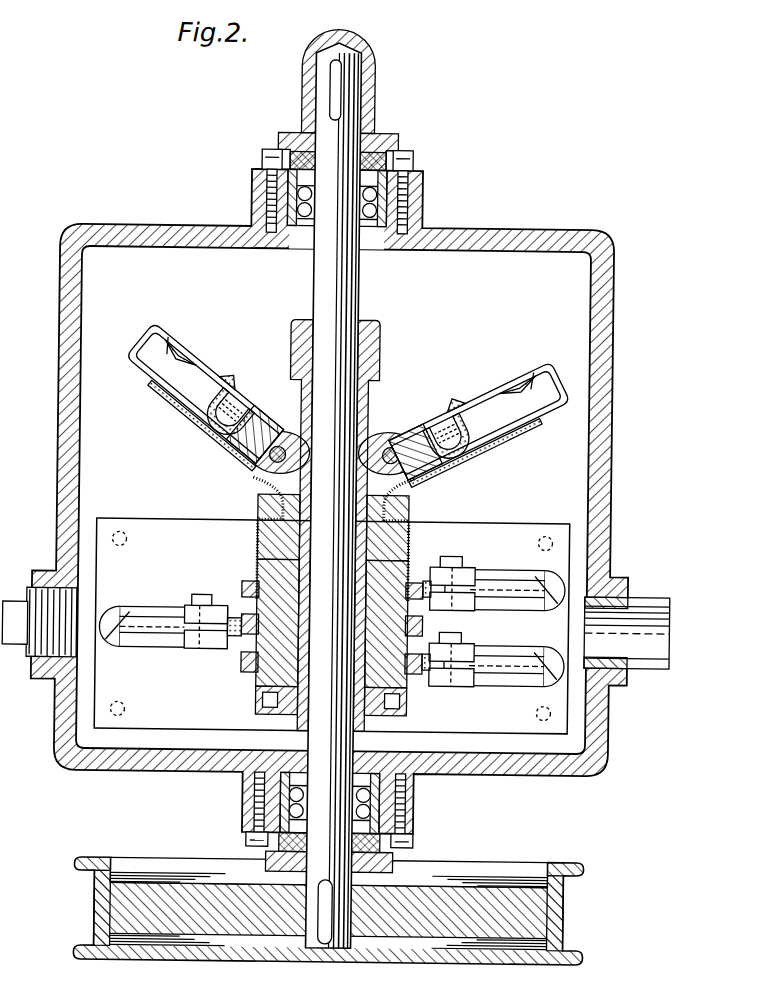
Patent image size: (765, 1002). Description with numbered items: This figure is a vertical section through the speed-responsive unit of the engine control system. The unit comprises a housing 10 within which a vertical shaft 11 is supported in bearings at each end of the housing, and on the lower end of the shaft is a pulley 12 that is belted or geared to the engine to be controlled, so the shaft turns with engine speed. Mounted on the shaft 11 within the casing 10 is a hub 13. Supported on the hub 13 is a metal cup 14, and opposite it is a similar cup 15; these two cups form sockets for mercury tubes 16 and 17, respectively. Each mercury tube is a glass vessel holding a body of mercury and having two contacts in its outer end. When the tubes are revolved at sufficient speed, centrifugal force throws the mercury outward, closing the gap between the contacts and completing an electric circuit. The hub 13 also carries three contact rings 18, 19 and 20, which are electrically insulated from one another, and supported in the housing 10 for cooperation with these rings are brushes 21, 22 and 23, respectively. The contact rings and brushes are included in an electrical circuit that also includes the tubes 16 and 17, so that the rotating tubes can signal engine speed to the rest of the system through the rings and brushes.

The housing 10 is at (611, 338).
The vertical shaft 11 is at (356, 287).
The pulley 12 is at (560, 909).
The hub 13 is at (371, 394).
The metal cup 14 is at (234, 396).
The cup 15 is at (411, 413).
The mercury tube 16 is at (196, 356).
The mercury tube 17 is at (485, 384).
The contact ring 18 is at (245, 582).
The contact ring 19 is at (246, 670).
The contact ring 20 is at (245, 635).
The brush 21 is at (495, 581).
The brush 22 is at (505, 671).
The brush 23 is at (168, 636).